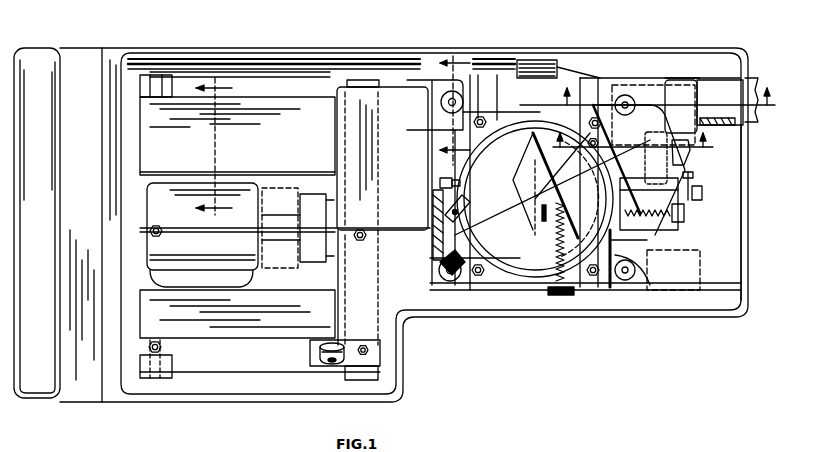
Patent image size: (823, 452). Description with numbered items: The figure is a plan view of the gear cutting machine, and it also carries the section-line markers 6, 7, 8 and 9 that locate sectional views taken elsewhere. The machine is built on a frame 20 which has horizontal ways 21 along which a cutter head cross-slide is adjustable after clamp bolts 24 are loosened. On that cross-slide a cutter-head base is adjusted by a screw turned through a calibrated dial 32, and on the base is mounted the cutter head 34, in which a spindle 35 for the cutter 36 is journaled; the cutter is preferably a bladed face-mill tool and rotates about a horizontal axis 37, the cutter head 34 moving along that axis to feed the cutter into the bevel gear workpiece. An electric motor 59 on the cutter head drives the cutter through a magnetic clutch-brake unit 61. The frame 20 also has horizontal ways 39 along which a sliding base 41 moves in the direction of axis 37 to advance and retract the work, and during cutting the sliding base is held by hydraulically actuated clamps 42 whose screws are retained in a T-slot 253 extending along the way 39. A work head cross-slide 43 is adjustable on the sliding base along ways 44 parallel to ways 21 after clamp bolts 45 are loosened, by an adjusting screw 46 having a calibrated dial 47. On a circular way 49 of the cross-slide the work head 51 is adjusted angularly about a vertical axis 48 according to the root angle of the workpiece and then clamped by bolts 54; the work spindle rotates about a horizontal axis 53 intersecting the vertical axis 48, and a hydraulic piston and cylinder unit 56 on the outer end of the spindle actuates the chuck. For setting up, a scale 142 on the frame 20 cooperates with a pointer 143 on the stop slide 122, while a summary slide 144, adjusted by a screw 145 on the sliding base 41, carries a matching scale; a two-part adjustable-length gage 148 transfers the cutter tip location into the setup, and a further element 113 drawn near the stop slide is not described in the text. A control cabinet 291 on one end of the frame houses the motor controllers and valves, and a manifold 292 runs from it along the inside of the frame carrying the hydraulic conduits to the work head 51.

The frame 20 is at (402, 382).
The control cabinet 291 is at (28, 390).
The manifold 292 is at (286, 70).
The horizontal ways 21 is at (168, 86).
The clamp bolts 24 is at (373, 226).
The calibrated dial 32 is at (318, 355).
The cutter head 34 is at (260, 149).
The spindle 35 is at (438, 244).
The cutter 36 is at (442, 268).
The axis of rotation of the cutter spindle 37 is at (390, 234).
The horizontal ways 39 is at (640, 88).
The sliding base 41 is at (680, 240).
The hydraulically actuated clamps 42 is at (440, 100).
The work head cross-slide 43 is at (500, 275).
The ways 44 is at (587, 88).
The clamp bolts 45 is at (456, 282).
The adjusting screw 46 is at (556, 237).
The calibrated dial 47 is at (548, 296).
The vertical axis 48 is at (555, 148).
The circular way 49 is at (507, 128).
The work head 51 is at (502, 175).
The horizontal axis 53 is at (572, 170).
The bolts 54 is at (590, 226).
The hydraulic piston and cylinder unit 56 is at (632, 141).
The electric motor 59 is at (215, 229).
The magnetic clutch-brake unit 61 is at (283, 272).
The cam follower 113 is at (680, 150).
The stop slide 122 is at (708, 80).
The scale 142 is at (727, 130).
The pointer 143 is at (728, 118).
The summary slide 144 is at (695, 188).
The screw 145 is at (686, 202).
The two-part adjustable-length gage 148 is at (440, 190).
The T-slot 253 is at (668, 285).
The section line 6- 6 is at (631, 145).
The section line 7- 7 is at (647, 110).
The section line 8- 8 is at (455, 103).
The section line 9- 9 is at (221, 147).